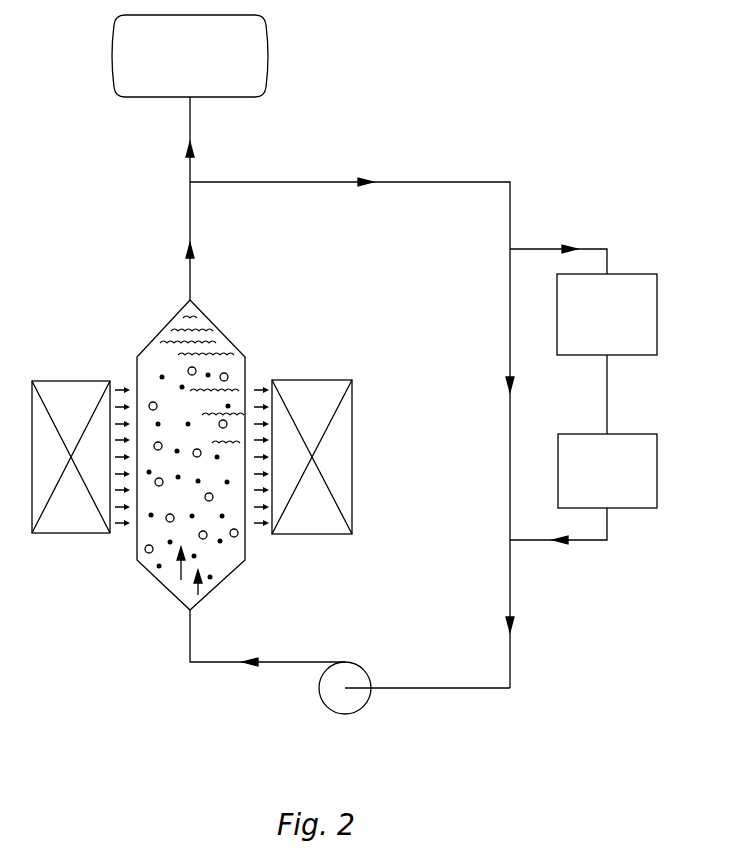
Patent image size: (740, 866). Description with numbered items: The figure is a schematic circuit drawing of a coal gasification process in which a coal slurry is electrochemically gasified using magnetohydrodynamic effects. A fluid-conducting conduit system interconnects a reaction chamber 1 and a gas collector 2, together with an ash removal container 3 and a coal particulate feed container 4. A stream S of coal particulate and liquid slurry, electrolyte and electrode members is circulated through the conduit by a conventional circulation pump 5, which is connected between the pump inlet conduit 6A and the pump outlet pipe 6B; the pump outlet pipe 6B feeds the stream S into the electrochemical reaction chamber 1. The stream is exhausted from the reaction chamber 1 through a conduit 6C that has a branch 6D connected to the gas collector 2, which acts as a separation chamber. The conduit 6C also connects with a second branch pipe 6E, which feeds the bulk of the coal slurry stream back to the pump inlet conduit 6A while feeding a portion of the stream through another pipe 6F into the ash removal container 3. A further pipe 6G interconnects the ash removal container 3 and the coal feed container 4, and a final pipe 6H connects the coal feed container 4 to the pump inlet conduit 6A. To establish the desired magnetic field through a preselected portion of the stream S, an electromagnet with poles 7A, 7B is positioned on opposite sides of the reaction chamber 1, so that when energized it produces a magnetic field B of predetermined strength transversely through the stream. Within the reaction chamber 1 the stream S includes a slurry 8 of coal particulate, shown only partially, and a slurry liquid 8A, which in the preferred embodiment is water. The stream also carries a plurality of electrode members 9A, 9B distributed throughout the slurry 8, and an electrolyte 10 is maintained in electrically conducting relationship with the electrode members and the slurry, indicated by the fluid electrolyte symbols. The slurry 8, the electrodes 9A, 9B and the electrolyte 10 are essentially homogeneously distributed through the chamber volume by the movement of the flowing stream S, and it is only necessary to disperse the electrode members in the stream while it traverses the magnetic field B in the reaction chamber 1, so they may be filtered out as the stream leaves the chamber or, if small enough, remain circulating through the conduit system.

The reaction chamber 1 is at (224, 346).
The gas collector 2 is at (266, 33).
The ash removal container 3 is at (658, 296).
The coal particulate feed container 4 is at (658, 452).
The circulation pump 5 is at (363, 671).
The pump inlet conduit 6A is at (422, 688).
The pump outlet pipe 6B is at (277, 664).
The chamber exhaust conduit 6C is at (192, 231).
The gas branch pipe 6D is at (190, 133).
The second branch pipe 6E is at (445, 182).
The ash removal pipe 6F is at (542, 249).
The interconnecting pipe 6G is at (610, 398).
The coal feed return pipe 6H is at (585, 541).
The electromagnet pole 7A is at (65, 380).
The electromagnet pole 7B is at (355, 413).
The slurry of coal particulate 8 is at (228, 405).
The slurry liquid 8A is at (183, 348).
The electrode member 9A is at (203, 540).
The electrode member 9B is at (234, 538).
The electrolyte 10 is at (165, 358).
The magnetic field B is at (119, 531).
The stream S is at (198, 593).